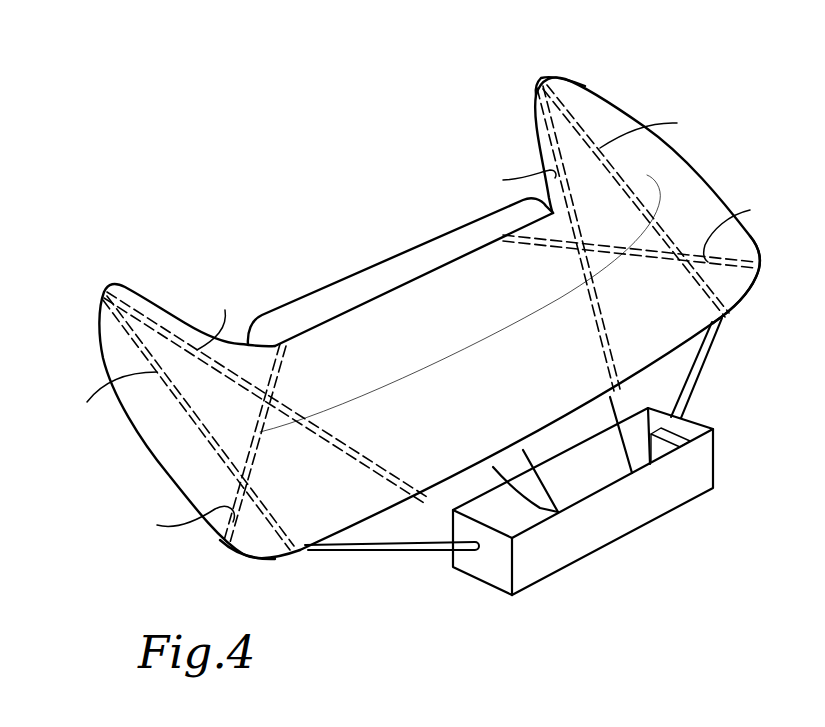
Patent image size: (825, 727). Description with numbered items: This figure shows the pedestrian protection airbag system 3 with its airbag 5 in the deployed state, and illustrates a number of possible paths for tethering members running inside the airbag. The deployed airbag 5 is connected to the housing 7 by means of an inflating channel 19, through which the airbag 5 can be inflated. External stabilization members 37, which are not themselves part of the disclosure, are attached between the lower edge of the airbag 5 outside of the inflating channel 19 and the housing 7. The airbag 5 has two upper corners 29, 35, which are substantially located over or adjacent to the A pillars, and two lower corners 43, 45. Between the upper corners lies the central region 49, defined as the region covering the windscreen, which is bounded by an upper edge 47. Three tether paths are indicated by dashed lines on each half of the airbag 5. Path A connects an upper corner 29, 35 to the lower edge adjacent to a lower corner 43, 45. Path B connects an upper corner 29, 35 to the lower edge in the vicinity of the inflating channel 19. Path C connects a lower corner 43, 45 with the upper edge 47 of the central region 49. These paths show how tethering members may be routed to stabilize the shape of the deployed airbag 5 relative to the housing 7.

The pedestrian protection airbag system 3 is at (230, 195).
The airbag 5 is at (687, 192).
The housing 7 is at (640, 500).
The inflating channel 19 is at (592, 474).
The upper corner 29 is at (108, 284).
The upper corner 35 is at (542, 86).
The external stabilization members 37 is at (423, 548).
The lower corner 43 is at (257, 545).
The lower corner 45 is at (753, 258).
The upper edge of the central region 47 is at (430, 272).
The central region 49 is at (397, 259).